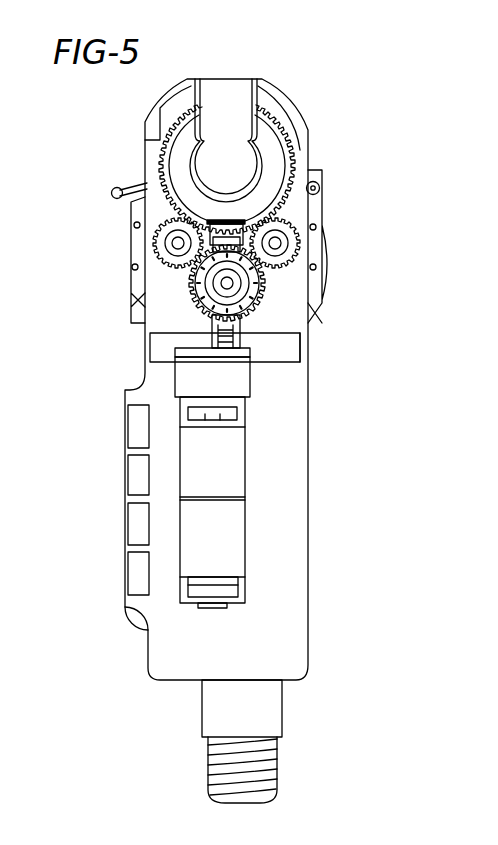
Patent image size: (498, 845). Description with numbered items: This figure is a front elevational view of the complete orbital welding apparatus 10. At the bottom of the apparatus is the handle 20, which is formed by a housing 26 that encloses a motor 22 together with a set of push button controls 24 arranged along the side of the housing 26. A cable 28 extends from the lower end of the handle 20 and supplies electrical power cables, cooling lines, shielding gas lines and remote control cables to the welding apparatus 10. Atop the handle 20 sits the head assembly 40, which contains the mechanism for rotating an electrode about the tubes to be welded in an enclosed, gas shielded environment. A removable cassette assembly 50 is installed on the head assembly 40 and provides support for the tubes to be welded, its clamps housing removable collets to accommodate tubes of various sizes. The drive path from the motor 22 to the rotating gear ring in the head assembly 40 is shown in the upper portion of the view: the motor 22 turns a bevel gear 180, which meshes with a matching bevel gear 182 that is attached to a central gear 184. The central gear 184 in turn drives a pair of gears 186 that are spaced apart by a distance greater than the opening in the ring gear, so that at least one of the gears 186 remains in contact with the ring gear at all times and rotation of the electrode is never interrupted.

The orbital welding apparatus 10 is at (428, 250).
The handle 20 is at (322, 527).
The motor 22 is at (230, 472).
The push button controls 24 is at (110, 530).
The housing 26 is at (170, 633).
The cable 28 is at (210, 757).
The head assembly 40 is at (256, 65).
The removable cassette assembly 50 is at (330, 168).
The bevel gear 180 is at (240, 322).
The matching bevel gear 182 is at (243, 284).
The central gear 184 is at (262, 302).
The gears 186 is at (170, 247).